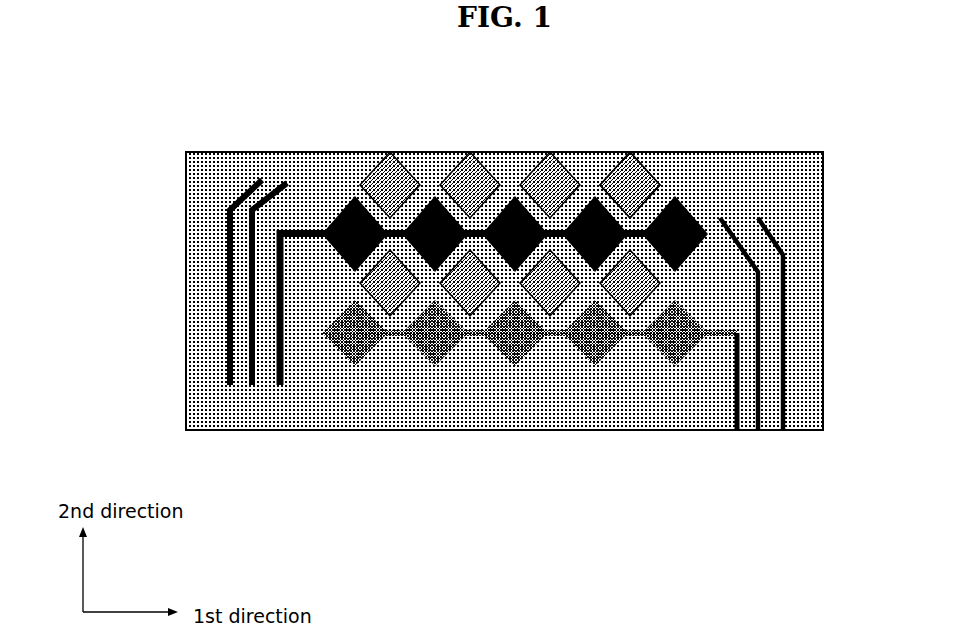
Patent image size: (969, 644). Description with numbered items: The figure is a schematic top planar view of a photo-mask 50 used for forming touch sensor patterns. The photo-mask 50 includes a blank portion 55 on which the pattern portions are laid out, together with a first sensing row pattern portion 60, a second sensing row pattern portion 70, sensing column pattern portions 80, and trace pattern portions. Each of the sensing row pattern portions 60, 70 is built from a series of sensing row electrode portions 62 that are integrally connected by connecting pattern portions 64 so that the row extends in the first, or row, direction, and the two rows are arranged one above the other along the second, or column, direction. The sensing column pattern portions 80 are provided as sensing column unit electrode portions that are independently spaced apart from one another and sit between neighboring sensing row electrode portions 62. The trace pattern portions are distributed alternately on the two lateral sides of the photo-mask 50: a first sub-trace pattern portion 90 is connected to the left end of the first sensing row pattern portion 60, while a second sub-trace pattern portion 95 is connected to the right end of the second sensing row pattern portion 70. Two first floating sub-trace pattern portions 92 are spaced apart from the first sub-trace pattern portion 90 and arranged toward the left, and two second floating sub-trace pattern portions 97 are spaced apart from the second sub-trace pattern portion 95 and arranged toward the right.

The photo-mask 50 is at (512, 307).
The blank portion 55 is at (745, 158).
The first sensing row pattern portion 60 is at (494, 208).
The sensing row electrode portions 62 is at (345, 198).
The connecting pattern portions 64 is at (388, 182).
The second sensing row pattern portion 70 is at (353, 370).
The sensing column pattern portion 80 is at (630, 162).
The first sub-trace pattern portion 90 is at (281, 388).
The first floating sub-trace pattern portions 92 is at (227, 388).
The second sub-trace pattern portion 95 is at (732, 383).
The second floating sub-trace pattern portions 97 is at (762, 388).